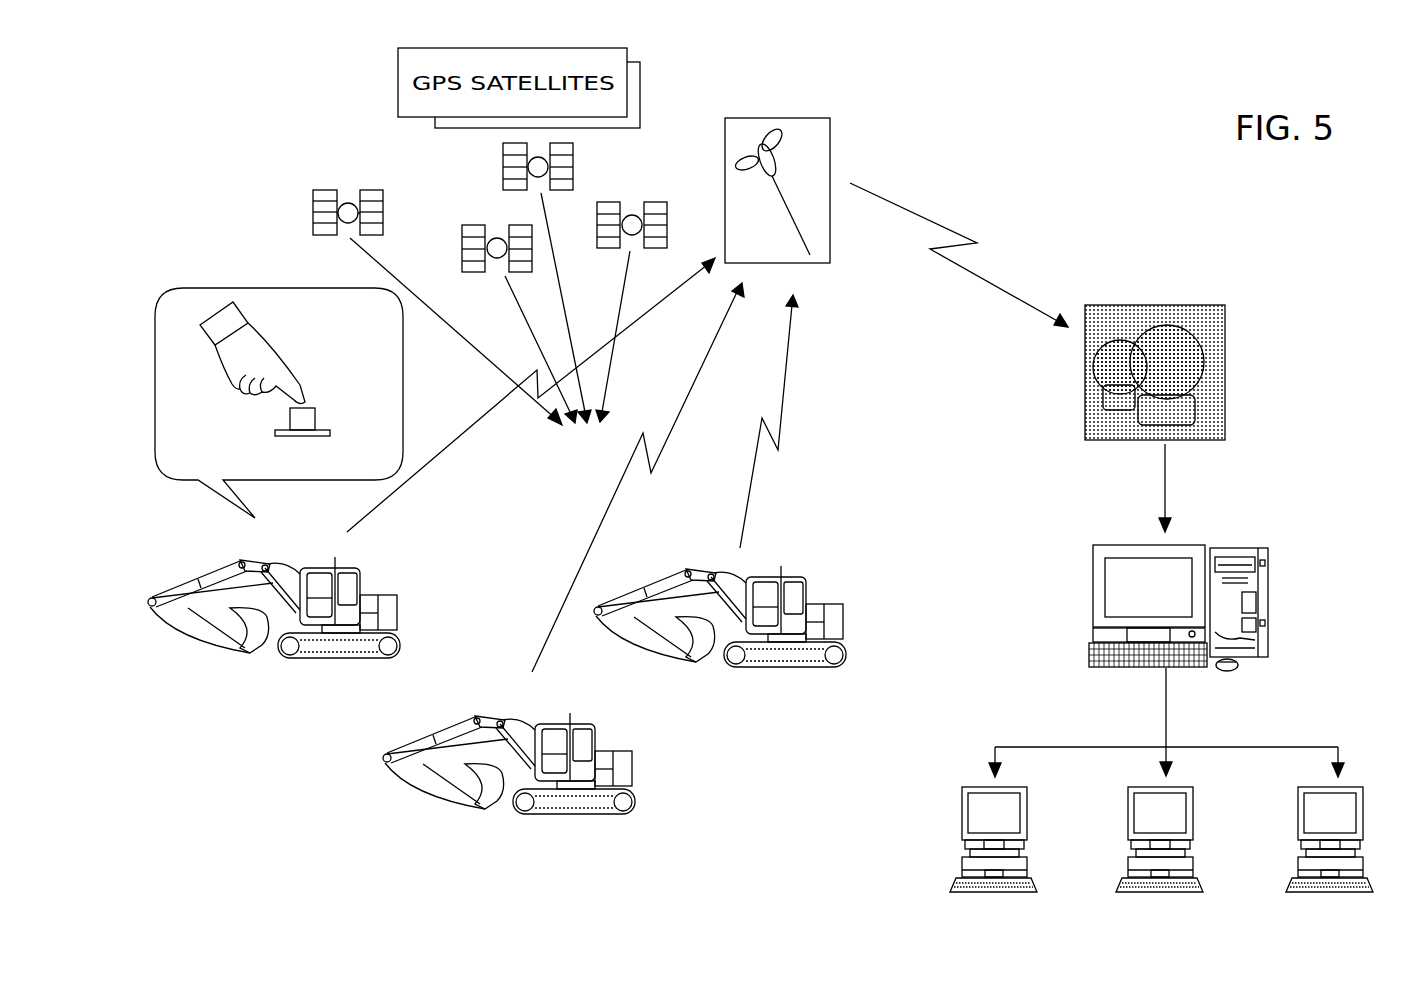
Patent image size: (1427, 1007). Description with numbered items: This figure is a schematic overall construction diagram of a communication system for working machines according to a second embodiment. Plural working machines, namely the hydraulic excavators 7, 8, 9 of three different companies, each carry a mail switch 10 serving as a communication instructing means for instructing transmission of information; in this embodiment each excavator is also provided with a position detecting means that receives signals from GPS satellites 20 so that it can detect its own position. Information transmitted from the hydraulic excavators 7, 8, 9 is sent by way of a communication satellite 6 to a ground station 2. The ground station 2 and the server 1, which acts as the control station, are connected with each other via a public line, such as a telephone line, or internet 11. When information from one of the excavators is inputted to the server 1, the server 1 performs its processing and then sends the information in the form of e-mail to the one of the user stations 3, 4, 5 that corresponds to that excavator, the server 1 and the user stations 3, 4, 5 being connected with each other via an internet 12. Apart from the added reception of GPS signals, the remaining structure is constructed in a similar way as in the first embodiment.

The server 1 is at (1270, 575).
The ground station 2 is at (1160, 305).
The user station 3 is at (1028, 798).
The user station 4 is at (1194, 810).
The user station 5 is at (1364, 808).
The communication satellite 6 is at (780, 118).
The hydraulic excavator 7 is at (397, 607).
The hydraulic excavator 8 is at (633, 769).
The hydraulic excavator 9 is at (842, 603).
The mail switch 10 is at (318, 410).
The public line or internet 11 is at (1163, 491).
The internet 12 is at (1045, 746).
The GPS satellites 20 is at (465, 228).